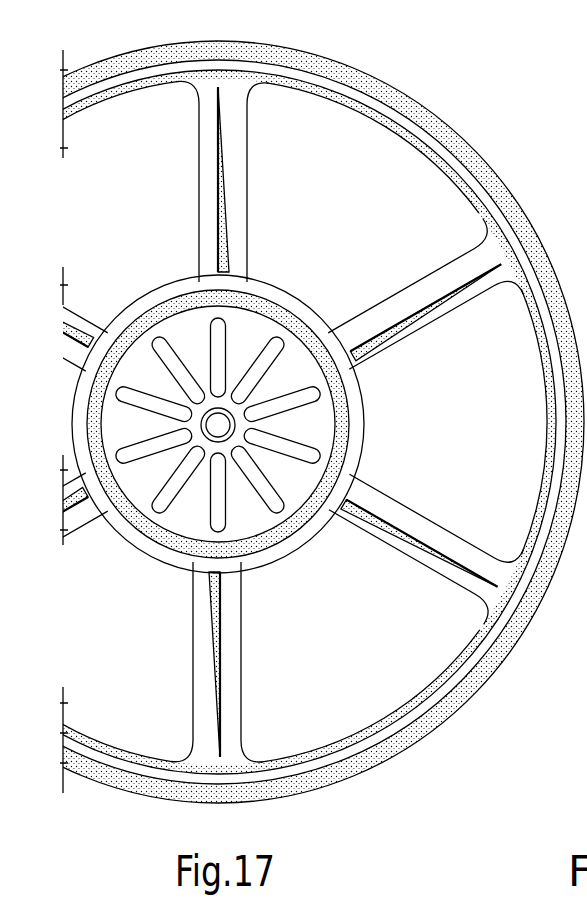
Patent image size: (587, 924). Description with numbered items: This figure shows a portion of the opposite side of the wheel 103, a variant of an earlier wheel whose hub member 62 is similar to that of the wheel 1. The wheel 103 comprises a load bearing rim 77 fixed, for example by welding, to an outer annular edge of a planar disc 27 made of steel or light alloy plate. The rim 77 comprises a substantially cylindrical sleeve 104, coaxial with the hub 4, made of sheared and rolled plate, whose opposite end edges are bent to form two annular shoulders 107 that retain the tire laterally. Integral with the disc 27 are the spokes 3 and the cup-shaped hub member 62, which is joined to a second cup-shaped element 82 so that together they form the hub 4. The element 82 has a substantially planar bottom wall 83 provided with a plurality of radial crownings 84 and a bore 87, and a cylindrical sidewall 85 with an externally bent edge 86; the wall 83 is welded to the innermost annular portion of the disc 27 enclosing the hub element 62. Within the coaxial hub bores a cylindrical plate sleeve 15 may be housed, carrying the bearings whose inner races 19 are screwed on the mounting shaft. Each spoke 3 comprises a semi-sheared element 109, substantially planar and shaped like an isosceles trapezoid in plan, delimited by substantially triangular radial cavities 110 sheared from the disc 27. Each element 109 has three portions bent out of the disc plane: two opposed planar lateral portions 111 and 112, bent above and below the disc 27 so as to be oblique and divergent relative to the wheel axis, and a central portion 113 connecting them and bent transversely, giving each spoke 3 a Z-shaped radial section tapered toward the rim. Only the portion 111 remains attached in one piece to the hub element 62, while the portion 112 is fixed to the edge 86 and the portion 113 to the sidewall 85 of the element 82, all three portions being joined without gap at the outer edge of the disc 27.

The wheel 103 is at (507, 108).
The annular shoulders 107 is at (398, 100).
The sleeve 104 is at (324, 86).
The inner races 19 is at (360, 110).
The planar disc 27 is at (92, 107).
The spokes 3 is at (261, 421).
The planar lateral portion 111 is at (210, 200).
The planar lateral portion 112 is at (237, 148).
The central portion 113 is at (250, 422).
The semi-sheared elements 109 is at (212, 267).
The radial cavities 110 is at (148, 128).
The second cup-shaped element 82 is at (247, 435).
The cylindrical sidewall 85 is at (354, 414).
The edge 86 is at (353, 445).
The bottom wall 83 is at (197, 577).
The radial crownings 84 is at (216, 328).
The hub 4 is at (283, 550).
The bore 87 is at (274, 545).
The cylindrical plate sleeve 15 is at (297, 262).
The hub member 62 is at (292, 282).
The load bearing rim 77 is at (189, 42).
The wheel 1 is at (567, 325).